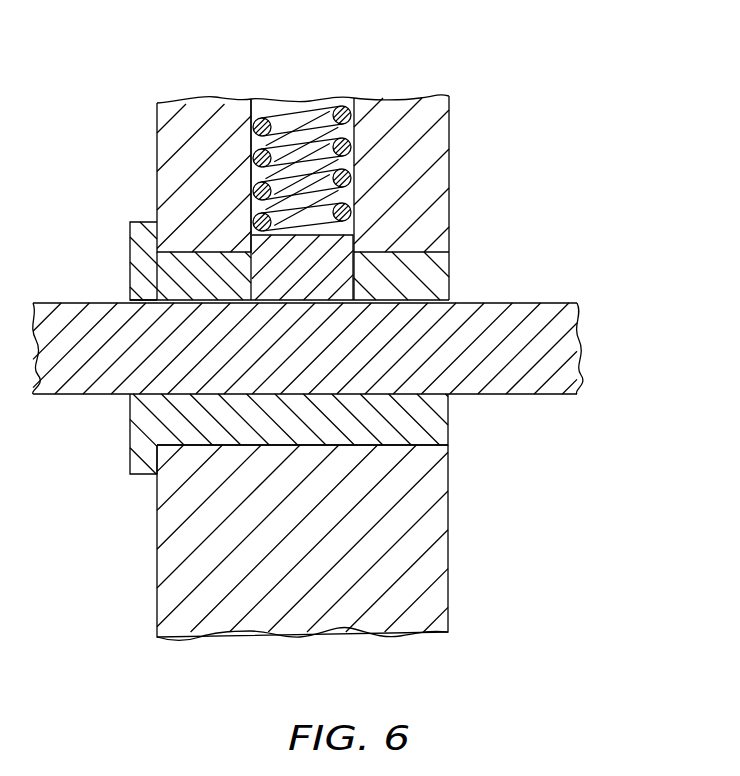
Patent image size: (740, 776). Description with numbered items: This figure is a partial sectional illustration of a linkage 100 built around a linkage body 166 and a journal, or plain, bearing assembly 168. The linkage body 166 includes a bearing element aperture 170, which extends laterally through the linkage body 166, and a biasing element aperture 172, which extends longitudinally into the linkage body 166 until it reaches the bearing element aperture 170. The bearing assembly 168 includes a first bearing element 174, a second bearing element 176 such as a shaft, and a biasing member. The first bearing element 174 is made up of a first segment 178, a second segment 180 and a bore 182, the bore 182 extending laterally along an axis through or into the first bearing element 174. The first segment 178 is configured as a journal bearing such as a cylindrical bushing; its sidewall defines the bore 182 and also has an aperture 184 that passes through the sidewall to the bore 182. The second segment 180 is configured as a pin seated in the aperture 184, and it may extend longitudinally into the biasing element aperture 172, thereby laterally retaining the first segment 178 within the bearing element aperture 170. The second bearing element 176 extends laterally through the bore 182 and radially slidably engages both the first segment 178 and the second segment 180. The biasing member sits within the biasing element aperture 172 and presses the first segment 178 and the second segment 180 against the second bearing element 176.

The linkage 100 is at (557, 92).
The linkage body 166 is at (450, 607).
The journal bearing assembly 168 is at (480, 275).
The bearing element aperture 170 is at (420, 449).
The biasing element aperture 172 is at (358, 161).
The first bearing element 174 is at (130, 252).
The second bearing element 176 is at (570, 337).
The first segment 178 is at (130, 430).
The second segment 180 is at (343, 248).
The bore 182 is at (455, 397).
The aperture 184 is at (250, 281).